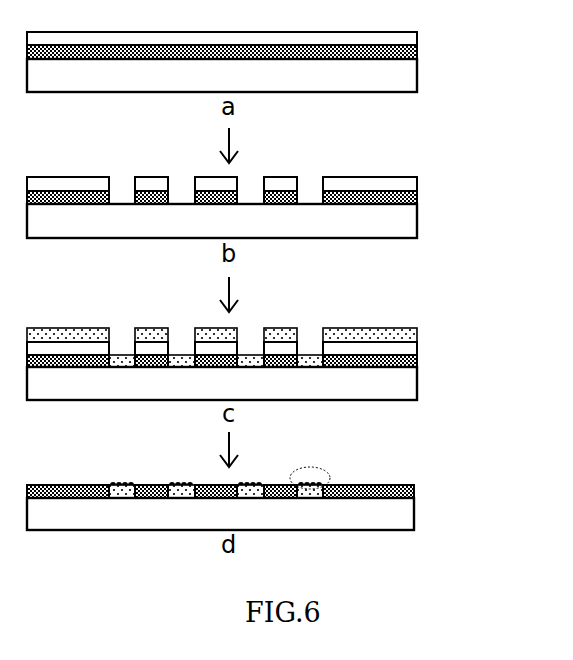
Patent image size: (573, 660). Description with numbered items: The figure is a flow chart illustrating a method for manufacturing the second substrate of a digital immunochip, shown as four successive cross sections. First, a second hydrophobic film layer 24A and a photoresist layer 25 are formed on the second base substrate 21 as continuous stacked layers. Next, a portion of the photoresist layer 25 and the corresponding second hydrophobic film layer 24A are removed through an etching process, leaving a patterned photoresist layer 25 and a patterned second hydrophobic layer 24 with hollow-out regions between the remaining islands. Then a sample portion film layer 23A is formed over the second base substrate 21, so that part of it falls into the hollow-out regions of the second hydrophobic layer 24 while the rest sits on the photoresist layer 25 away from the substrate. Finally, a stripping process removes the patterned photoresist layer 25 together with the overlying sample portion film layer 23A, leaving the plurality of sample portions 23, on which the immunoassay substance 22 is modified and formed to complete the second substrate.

The second base substrate 21 is at (370, 69).
The immunoassay substance 22 is at (322, 473).
The sample portions 23 is at (253, 499).
The sample portion film layer 23A is at (372, 335).
The second hydrophobic layer 24 is at (380, 199).
The second hydrophobic film layer 24A is at (372, 50).
The photoresist layer 25 is at (370, 39).